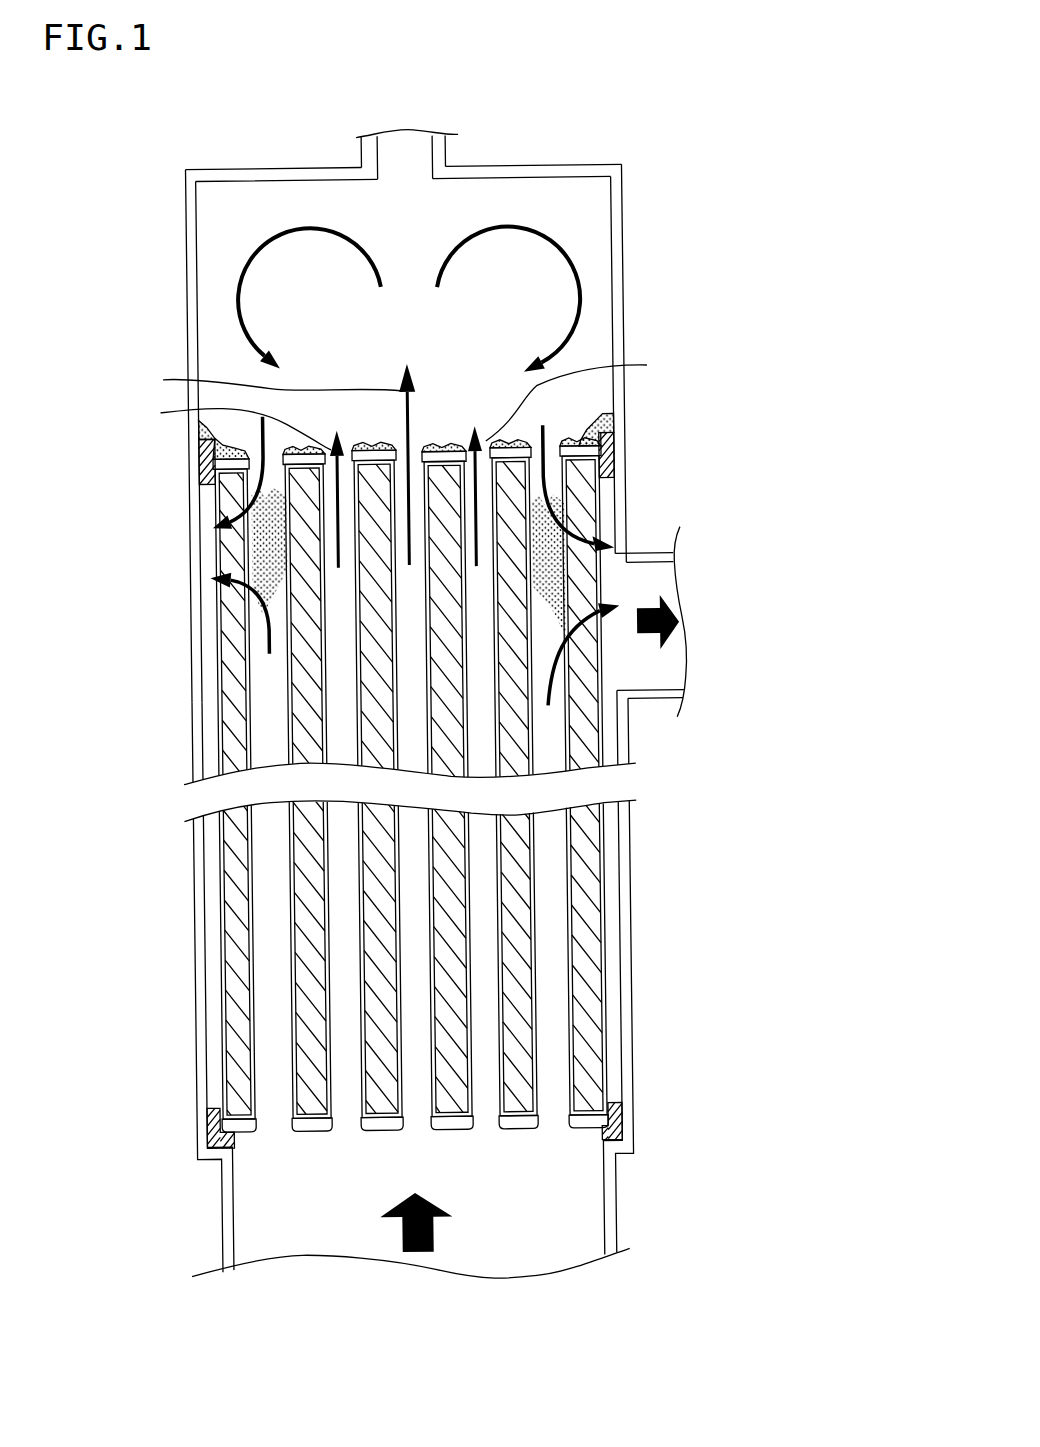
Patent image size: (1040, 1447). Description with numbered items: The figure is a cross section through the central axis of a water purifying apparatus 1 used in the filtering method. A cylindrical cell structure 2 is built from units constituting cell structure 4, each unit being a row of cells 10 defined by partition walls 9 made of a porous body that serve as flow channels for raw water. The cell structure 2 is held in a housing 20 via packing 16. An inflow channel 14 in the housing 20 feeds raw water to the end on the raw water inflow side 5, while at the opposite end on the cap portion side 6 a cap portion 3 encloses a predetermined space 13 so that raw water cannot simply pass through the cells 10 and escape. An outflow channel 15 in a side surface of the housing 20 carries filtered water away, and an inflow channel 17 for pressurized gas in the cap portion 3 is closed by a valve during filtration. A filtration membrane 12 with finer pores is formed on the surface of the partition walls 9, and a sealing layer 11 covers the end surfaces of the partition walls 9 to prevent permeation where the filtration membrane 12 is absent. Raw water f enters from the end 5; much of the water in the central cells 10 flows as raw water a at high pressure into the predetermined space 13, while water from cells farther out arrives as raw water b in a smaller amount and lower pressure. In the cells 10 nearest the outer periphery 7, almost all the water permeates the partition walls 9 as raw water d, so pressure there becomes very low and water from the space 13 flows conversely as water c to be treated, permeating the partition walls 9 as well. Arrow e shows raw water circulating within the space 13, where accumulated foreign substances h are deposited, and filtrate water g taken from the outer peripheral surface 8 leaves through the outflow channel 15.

The water purifying apparatus 1 is at (434, 699).
The cell structure 2 is at (613, 499).
The cap portion 3 is at (644, 339).
The units constituting cell structure 4 is at (424, 831).
The end on the raw water inflow side 5 is at (518, 1137).
The end on the cap portion side 6 is at (573, 439).
The outer periphery of the cell structure 7 is at (605, 925).
The outer peripheral surface of the cell structure 8 is at (626, 785).
The partition walls 9 is at (235, 897).
The cells 10 is at (555, 1007).
The sealing layer 11 is at (237, 480).
The filtration membrane 12 is at (424, 831).
The predetermined space 13 is at (596, 232).
The inflow channel 14 is at (214, 1233).
The outflow channel 15 is at (685, 531).
The packing 16 is at (603, 468).
The inflow channel for pressurized gas 17 is at (454, 153).
The housing 20 is at (190, 848).
The raw water a is at (312, 463).
The raw water b is at (402, 403).
The water c to be treated c is at (219, 528).
The raw water d is at (271, 628).
The circulating raw water e is at (243, 303).
The raw water f is at (426, 1237).
The filtrate water g is at (648, 613).
The accumulated foreign substances h is at (205, 432).